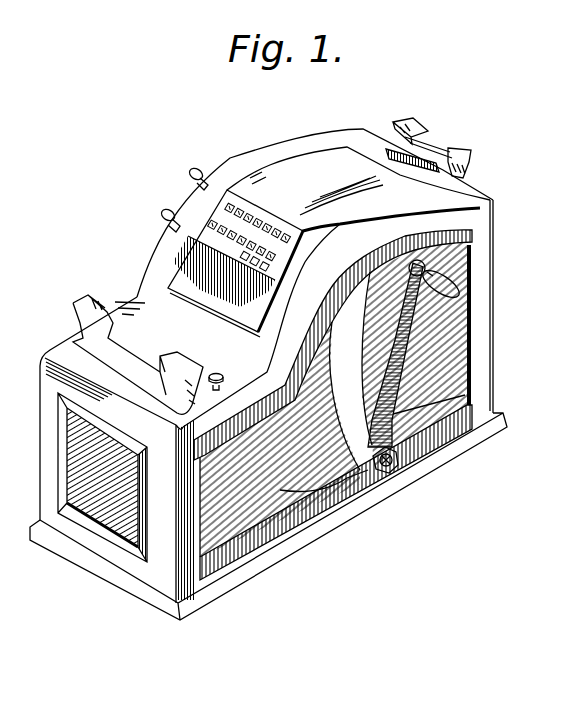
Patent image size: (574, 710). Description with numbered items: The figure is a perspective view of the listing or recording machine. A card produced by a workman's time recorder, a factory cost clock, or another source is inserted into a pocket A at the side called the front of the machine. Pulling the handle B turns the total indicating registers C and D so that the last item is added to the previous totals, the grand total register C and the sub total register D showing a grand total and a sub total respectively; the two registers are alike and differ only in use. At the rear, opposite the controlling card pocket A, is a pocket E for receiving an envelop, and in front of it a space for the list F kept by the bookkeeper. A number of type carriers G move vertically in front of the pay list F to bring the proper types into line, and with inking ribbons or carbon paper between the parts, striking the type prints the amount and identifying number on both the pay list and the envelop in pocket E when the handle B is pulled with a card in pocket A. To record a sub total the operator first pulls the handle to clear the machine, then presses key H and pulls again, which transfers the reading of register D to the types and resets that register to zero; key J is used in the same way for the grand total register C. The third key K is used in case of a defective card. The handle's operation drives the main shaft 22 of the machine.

The pocket A is at (73, 311).
The handle B is at (386, 393).
The grand total register C is at (254, 224).
The sub total register D is at (238, 258).
The pocket for envelop E is at (462, 151).
The list F is at (450, 173).
The type carriers G is at (438, 172).
The key H is at (166, 211).
The key J is at (196, 176).
The third key K is at (223, 379).
The main shaft 22 is at (389, 473).